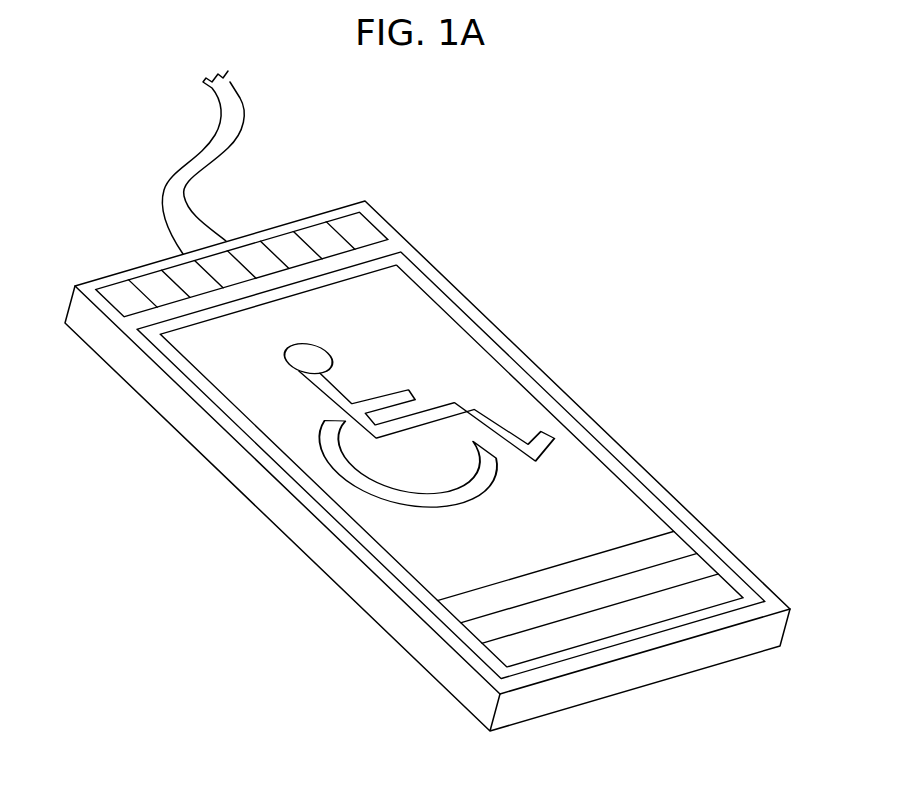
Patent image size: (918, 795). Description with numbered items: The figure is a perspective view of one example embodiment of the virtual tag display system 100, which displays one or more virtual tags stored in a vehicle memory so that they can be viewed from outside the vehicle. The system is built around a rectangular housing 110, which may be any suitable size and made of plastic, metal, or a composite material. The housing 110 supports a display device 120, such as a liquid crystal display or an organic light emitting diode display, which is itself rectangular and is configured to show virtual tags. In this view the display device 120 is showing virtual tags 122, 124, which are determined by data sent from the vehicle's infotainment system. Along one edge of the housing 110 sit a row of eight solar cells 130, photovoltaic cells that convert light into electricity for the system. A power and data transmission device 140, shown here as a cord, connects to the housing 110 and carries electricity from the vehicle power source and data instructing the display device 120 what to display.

The virtual tag display system 100 is at (616, 224).
The housing 110 is at (407, 237).
The display device 120 is at (587, 432).
The virtual tag 122 is at (490, 358).
The virtual tag 124 is at (722, 583).
The solar cells 130 is at (118, 297).
The power and data transmission device 140 is at (233, 102).